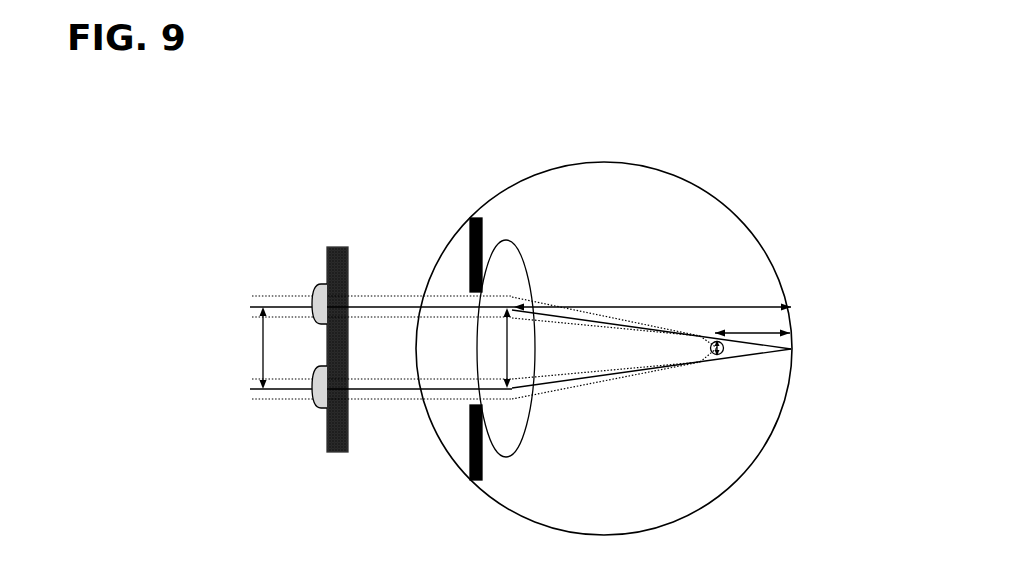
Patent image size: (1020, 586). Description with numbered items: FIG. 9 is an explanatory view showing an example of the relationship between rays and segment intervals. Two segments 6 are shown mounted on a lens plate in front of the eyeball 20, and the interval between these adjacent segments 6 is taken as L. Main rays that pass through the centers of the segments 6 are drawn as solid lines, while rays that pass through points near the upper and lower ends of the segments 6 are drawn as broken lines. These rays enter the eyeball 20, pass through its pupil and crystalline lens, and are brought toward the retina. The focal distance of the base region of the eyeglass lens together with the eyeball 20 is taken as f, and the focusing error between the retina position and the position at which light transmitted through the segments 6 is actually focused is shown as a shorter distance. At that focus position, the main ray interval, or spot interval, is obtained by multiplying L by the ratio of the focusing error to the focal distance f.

The segment 6 is at (313, 289).
The eyeball 20 is at (625, 335).
The interval between adjacent segments L is at (272, 348).
The focal distance f is at (651, 293).